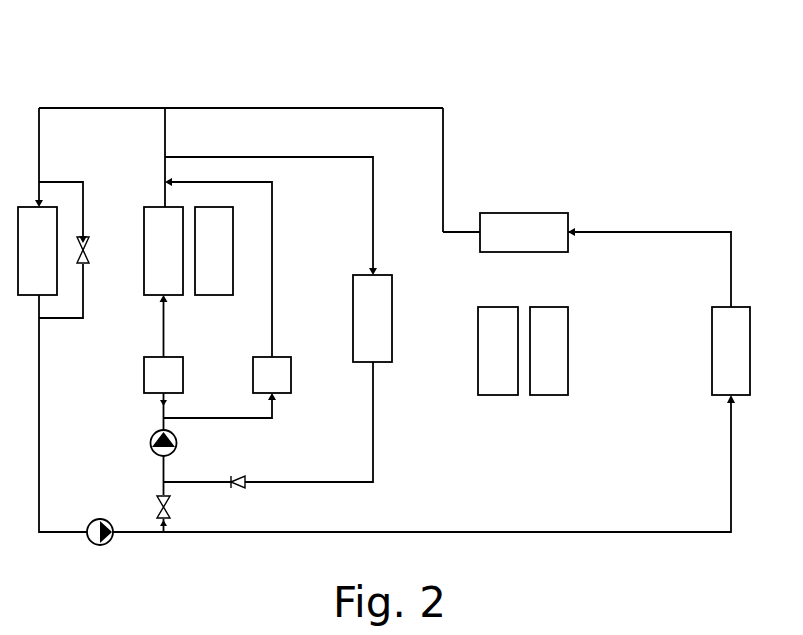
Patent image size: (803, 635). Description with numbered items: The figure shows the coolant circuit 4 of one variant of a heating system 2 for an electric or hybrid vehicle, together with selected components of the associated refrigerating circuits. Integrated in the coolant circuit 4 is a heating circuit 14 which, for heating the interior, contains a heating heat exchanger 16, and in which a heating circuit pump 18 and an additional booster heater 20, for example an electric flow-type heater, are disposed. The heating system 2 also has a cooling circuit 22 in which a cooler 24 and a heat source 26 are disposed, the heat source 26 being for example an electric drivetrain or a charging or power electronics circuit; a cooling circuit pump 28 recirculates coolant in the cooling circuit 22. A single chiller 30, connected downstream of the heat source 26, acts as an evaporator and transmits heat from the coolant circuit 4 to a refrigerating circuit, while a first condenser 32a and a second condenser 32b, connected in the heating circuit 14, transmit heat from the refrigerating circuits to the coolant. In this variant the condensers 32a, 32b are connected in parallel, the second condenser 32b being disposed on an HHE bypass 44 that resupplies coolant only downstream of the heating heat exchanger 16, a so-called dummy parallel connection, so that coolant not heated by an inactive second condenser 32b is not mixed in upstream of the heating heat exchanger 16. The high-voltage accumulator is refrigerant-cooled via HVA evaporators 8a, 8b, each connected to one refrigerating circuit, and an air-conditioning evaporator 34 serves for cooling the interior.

The heating system 2 is at (64, 73).
The coolant circuit 4 is at (100, 103).
The cooling circuit 22 is at (405, 107).
The heating circuit 14 is at (372, 228).
The HHE bypass 44 is at (272, 296).
The cooler 24 is at (37, 251).
The heating heat exchanger 16 is at (163, 251).
The air-conditioning evaporator 34 is at (214, 251).
The booster heater 20 is at (372, 318).
The HVA evaporator 8a is at (498, 351).
The HVA evaporator 8b is at (549, 351).
The heat source 26 is at (731, 351).
The chiller 30 is at (524, 232).
The first condenser 32a is at (144, 375).
The second condenser 32b is at (253, 375).
The heating circuit pump 18 is at (152, 443).
The cooling circuit pump 28 is at (92, 522).